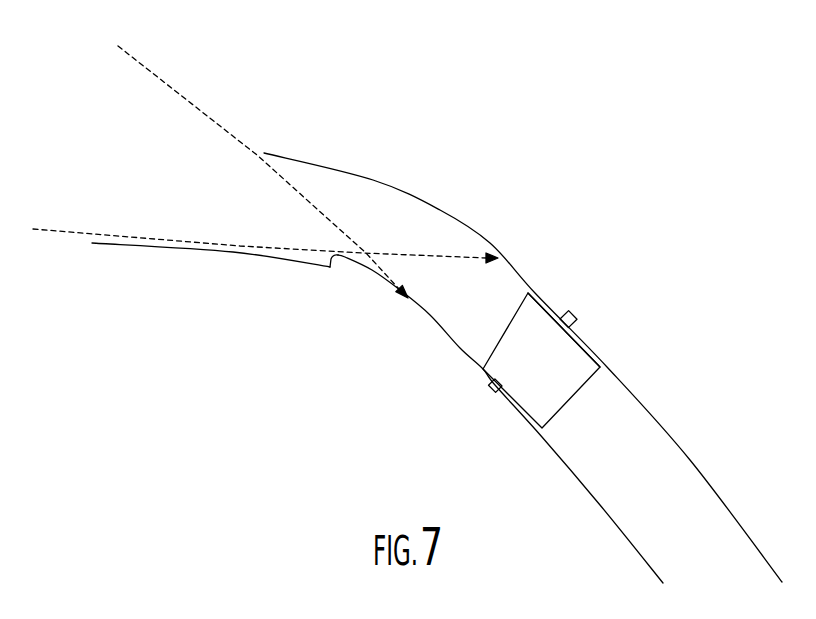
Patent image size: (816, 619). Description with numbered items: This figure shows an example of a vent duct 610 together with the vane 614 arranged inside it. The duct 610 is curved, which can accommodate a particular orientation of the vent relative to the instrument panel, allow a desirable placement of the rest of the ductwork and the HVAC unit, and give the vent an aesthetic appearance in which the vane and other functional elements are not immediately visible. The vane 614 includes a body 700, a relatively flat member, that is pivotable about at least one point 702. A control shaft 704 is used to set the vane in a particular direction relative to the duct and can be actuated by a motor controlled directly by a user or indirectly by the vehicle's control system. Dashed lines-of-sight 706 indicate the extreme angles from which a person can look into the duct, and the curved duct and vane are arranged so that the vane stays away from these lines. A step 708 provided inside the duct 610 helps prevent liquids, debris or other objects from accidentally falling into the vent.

The lines-of-sight 706 is at (158, 78).
The duct 610 is at (370, 183).
The step 708 is at (349, 278).
The body 700 is at (540, 371).
The control shaft 704 is at (573, 310).
The point 702 is at (493, 391).
The vane 614 is at (570, 365).